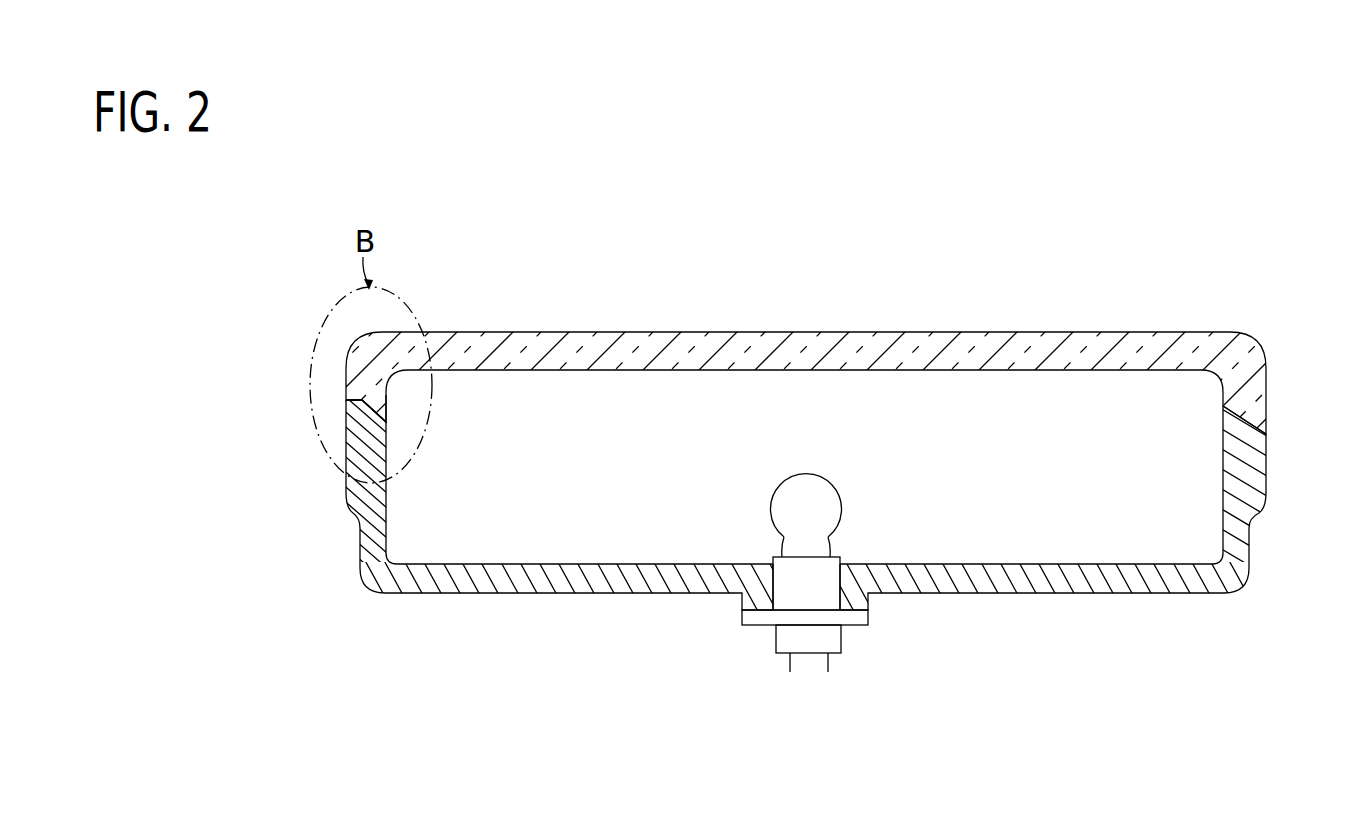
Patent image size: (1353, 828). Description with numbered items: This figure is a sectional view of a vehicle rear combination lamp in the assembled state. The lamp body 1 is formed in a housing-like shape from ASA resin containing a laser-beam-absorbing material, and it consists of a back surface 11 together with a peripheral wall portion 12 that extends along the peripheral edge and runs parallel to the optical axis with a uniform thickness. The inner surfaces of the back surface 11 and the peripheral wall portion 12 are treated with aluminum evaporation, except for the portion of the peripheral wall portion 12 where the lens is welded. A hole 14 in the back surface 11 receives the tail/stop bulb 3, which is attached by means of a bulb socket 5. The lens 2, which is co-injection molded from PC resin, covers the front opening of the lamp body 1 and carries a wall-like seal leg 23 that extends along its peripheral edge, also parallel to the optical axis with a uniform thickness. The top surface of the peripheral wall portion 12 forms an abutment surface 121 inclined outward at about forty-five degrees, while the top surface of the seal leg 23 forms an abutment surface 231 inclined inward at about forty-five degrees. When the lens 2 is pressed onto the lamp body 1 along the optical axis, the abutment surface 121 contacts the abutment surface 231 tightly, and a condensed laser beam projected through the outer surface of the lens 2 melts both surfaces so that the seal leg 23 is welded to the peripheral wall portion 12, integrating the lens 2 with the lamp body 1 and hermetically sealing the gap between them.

The lamp body 1 is at (1112, 582).
The lens 2 is at (819, 345).
The tail/stop bulb 3 is at (825, 518).
The bulb socket 5 is at (793, 590).
The back surface 11 is at (495, 553).
The peripheral wall portion 12 is at (392, 486).
The hole 14 is at (825, 588).
The seal leg 23 is at (358, 374).
The abutment surface 121 is at (347, 401).
The abutment surface 231 is at (386, 427).